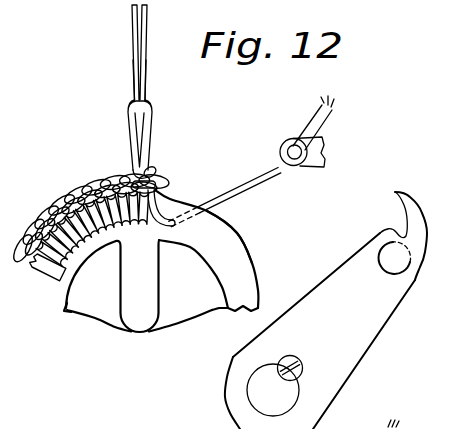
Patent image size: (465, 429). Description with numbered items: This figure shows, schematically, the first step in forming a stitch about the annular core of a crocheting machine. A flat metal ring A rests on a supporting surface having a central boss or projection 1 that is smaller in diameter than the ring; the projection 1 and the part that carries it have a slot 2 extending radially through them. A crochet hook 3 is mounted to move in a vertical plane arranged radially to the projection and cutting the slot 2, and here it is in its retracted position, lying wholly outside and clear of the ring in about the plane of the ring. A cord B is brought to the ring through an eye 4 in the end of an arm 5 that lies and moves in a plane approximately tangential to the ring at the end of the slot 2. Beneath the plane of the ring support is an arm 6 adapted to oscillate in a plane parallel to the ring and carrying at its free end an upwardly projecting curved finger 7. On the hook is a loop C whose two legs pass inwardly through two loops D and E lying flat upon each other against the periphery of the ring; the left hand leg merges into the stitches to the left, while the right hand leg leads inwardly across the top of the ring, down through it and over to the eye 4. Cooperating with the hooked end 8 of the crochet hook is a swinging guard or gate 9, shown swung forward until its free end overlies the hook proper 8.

The central boss or projection 1 is at (95, 303).
The slot 2 is at (145, 279).
The crochet hook 3 is at (147, 32).
The eye 4 is at (288, 145).
The arm 5 is at (327, 162).
The arm 6 is at (363, 325).
The curved finger 7 is at (413, 215).
The hooked end 8 is at (136, 108).
The swinging guard or gate 9 is at (135, 82).
The flat metal ring A is at (228, 240).
The cord B is at (253, 182).
The loop C is at (152, 130).
The loop D is at (152, 183).
The loop E is at (155, 167).